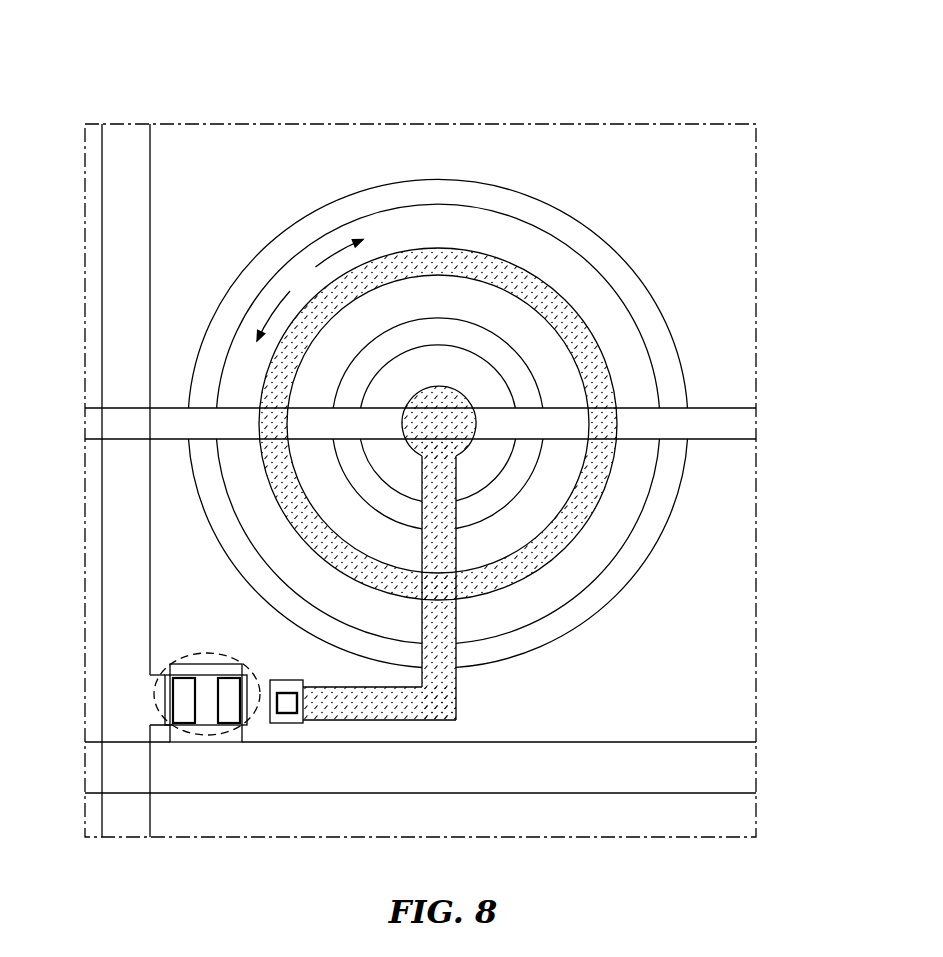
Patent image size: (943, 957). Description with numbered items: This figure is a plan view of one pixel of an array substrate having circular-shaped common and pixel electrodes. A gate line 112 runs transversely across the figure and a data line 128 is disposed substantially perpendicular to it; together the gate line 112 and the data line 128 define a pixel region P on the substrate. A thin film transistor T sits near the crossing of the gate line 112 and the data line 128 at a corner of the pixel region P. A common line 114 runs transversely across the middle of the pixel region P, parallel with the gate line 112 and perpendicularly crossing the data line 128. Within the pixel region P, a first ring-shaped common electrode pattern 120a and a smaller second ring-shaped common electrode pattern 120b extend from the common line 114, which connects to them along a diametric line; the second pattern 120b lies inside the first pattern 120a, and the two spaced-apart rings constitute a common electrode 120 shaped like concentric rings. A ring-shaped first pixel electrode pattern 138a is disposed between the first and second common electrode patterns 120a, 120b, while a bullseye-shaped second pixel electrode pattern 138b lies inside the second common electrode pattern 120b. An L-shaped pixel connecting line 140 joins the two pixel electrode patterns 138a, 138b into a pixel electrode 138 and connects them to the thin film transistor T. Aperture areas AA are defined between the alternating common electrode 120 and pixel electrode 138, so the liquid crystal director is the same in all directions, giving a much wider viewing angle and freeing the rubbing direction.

The pixel region P is at (168, 237).
The data line 128 is at (150, 838).
The gate line 112 is at (756, 743).
The common line 114 is at (756, 408).
The common electrode 120 is at (438, 339).
The first ring-shaped common electrode pattern 120a is at (442, 195).
The second ring-shaped common electrode pattern 120b is at (513, 277).
The pixel electrode 138 is at (540, 362).
The first pixel electrode pattern 138a is at (457, 337).
The second pixel electrode pattern 138b is at (460, 393).
The pixel connecting line 140 is at (432, 703).
The thin film transistor T is at (203, 737).
The aperture areas AA is at (310, 291).